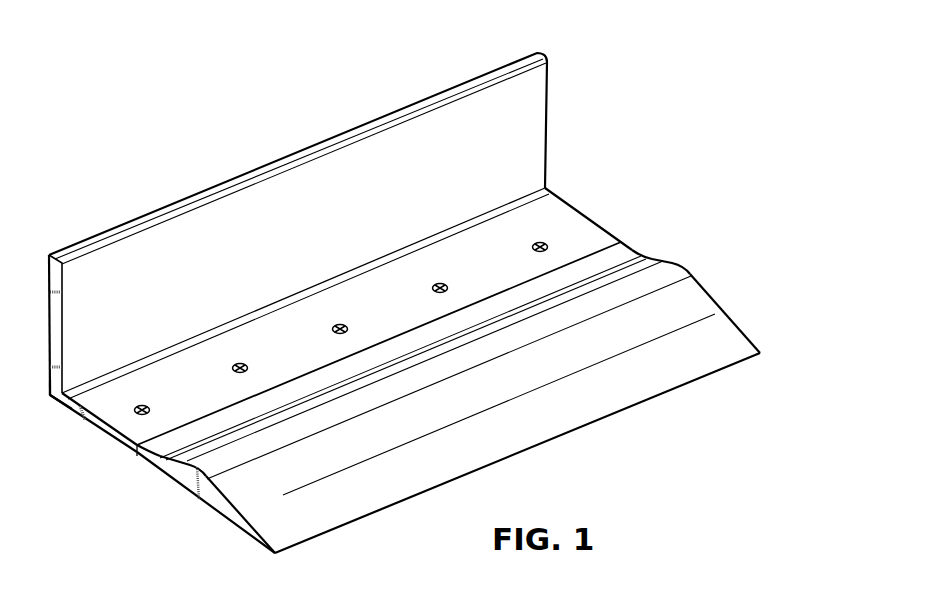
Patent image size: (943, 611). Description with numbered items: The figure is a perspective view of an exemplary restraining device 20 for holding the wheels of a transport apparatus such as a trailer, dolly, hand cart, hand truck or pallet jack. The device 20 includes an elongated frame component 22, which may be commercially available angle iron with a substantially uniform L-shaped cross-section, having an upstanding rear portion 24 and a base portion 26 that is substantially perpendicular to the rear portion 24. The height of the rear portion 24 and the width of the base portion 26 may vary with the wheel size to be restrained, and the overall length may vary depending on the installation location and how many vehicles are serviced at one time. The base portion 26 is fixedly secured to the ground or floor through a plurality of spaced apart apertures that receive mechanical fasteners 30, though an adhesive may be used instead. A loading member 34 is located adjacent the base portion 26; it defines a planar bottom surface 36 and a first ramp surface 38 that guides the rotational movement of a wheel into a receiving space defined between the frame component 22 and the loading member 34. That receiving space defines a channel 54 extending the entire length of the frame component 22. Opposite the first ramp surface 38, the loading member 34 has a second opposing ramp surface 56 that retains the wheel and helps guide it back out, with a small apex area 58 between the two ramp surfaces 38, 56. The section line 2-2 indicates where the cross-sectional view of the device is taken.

The restraining device 20 is at (401, 310).
The elongated frame component 22 is at (44, 390).
The upstanding rear portion 24 is at (48, 290).
The base portion 26 is at (130, 452).
The mechanical fasteners 30 is at (135, 411).
The loading member 34 is at (333, 506).
The planar bottom surface 36 is at (180, 488).
The ramp surface 38 is at (707, 293).
The channel 54 is at (606, 202).
The second opposing ramp surface 56 is at (653, 258).
The apex area 58 is at (682, 265).
The section line 2- 2 is at (230, 173).